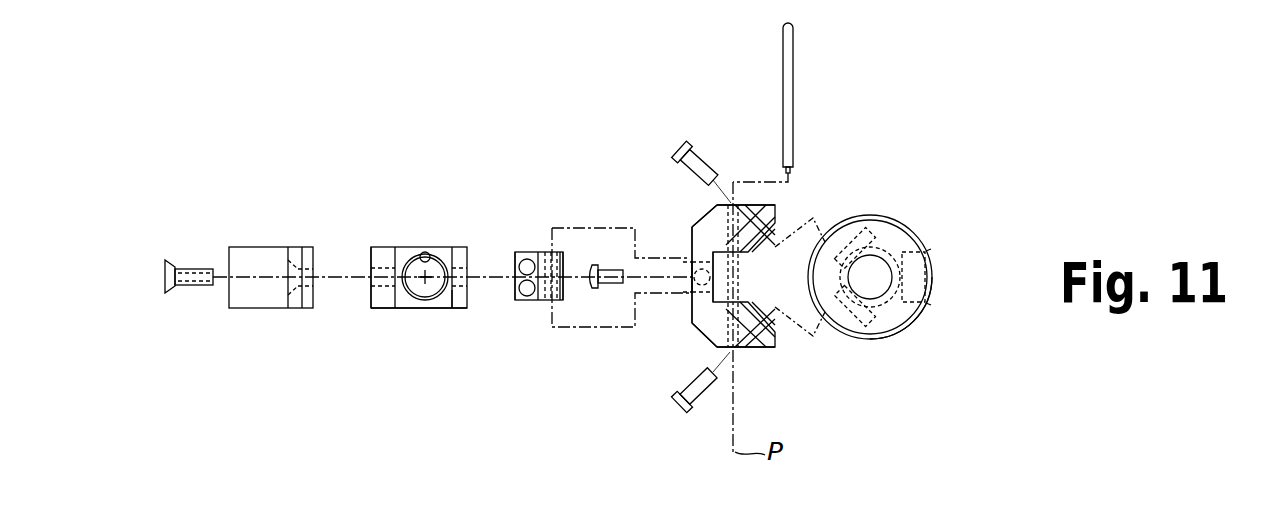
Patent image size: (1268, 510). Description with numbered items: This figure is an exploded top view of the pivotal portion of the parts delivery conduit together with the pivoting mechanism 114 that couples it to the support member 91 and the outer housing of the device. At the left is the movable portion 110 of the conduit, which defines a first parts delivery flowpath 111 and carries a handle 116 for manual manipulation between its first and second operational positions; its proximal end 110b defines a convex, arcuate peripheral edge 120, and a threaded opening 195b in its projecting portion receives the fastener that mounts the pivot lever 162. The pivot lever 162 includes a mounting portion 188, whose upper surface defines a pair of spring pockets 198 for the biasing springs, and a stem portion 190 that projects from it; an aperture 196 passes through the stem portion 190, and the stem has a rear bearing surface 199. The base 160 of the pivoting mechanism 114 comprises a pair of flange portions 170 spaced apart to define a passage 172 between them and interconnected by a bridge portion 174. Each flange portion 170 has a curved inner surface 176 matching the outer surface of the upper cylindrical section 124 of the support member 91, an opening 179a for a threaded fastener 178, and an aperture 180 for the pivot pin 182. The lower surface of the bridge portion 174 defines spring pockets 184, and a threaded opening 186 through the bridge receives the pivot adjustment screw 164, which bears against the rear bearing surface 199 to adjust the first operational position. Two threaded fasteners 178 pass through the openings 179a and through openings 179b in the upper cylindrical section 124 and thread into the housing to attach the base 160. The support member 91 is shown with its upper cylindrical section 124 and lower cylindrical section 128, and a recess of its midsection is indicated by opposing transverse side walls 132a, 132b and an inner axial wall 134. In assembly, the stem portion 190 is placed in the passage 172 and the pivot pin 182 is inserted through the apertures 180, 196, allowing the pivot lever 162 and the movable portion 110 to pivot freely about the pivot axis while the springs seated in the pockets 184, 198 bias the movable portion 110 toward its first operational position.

The support member 91 is at (924, 229).
The movable portion 110 is at (414, 311).
The proximal end 110b is at (403, 296).
The first parts delivery flowpath 111 is at (424, 256).
The pivoting mechanism 114 is at (581, 161).
The handle 116 is at (257, 247).
The peripheral edge 120 is at (404, 254).
The upper cylindrical section 124 is at (892, 221).
The lower cylindrical section 128 is at (907, 327).
The transverse side wall 132a is at (932, 292).
The transverse side wall 132b is at (932, 262).
The inner axial wall 134 is at (925, 277).
The base 160 is at (702, 340).
The pivot lever 162 is at (533, 312).
The pivot adjustment screw 164 is at (612, 267).
The flange portion 170 is at (760, 205).
The passage 172 is at (729, 268).
The bridge portion 174 is at (720, 279).
The curved inner surface 176 is at (768, 232).
The threaded fastener 178 is at (697, 143).
The opening 179a is at (777, 212).
The opening 179b is at (845, 218).
The aperture 180 is at (689, 210).
The pivot pin 182 is at (795, 90).
The spring pocket 184 is at (694, 224).
The threaded opening 186 is at (690, 270).
The mounting portion 188 is at (515, 262).
The stem portion 190 is at (556, 246).
The threaded opening 195b is at (470, 304).
The aperture 196 is at (566, 285).
The spring pocket 198 is at (529, 259).
The rear bearing surface 199 is at (533, 252).